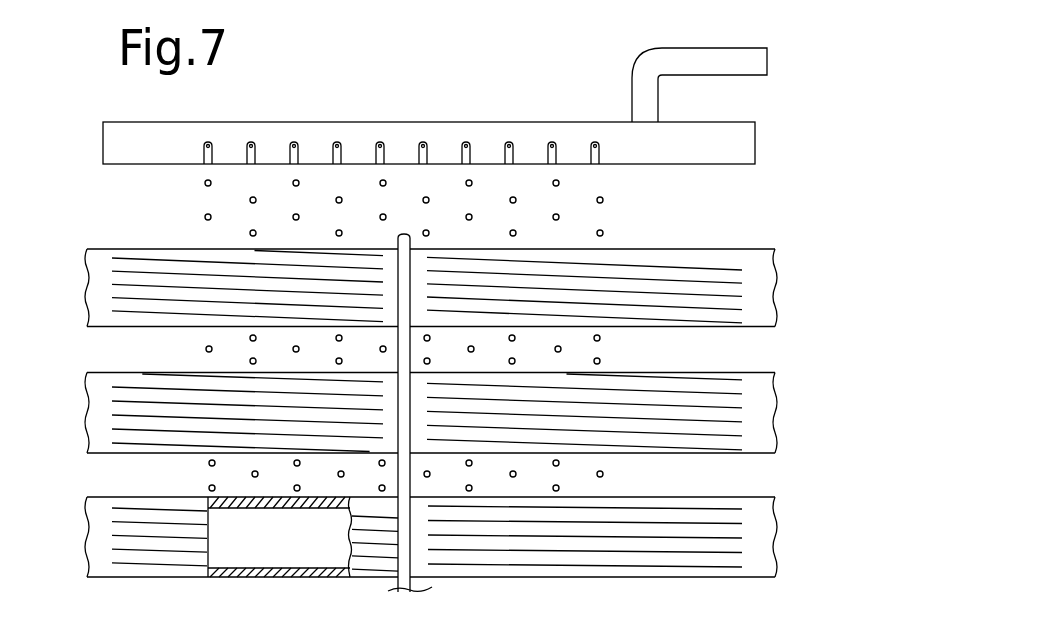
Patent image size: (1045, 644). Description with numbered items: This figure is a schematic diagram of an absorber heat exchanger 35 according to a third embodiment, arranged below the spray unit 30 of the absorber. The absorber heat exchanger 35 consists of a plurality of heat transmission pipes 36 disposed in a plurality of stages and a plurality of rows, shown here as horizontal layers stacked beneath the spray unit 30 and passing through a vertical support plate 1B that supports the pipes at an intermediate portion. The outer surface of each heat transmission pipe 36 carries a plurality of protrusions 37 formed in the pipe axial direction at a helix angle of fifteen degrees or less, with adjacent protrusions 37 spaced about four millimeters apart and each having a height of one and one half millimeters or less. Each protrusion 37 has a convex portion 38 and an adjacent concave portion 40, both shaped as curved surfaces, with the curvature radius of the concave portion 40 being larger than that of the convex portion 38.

The spray unit 30 is at (438, 120).
The absorber heat exchanger 35 is at (128, 233).
The heat transmission pipe 36 is at (776, 268).
The protrusion 37 is at (732, 282).
The convex portion 38 is at (670, 282).
The concave portion 40 is at (632, 267).
The support plate 1B is at (425, 587).